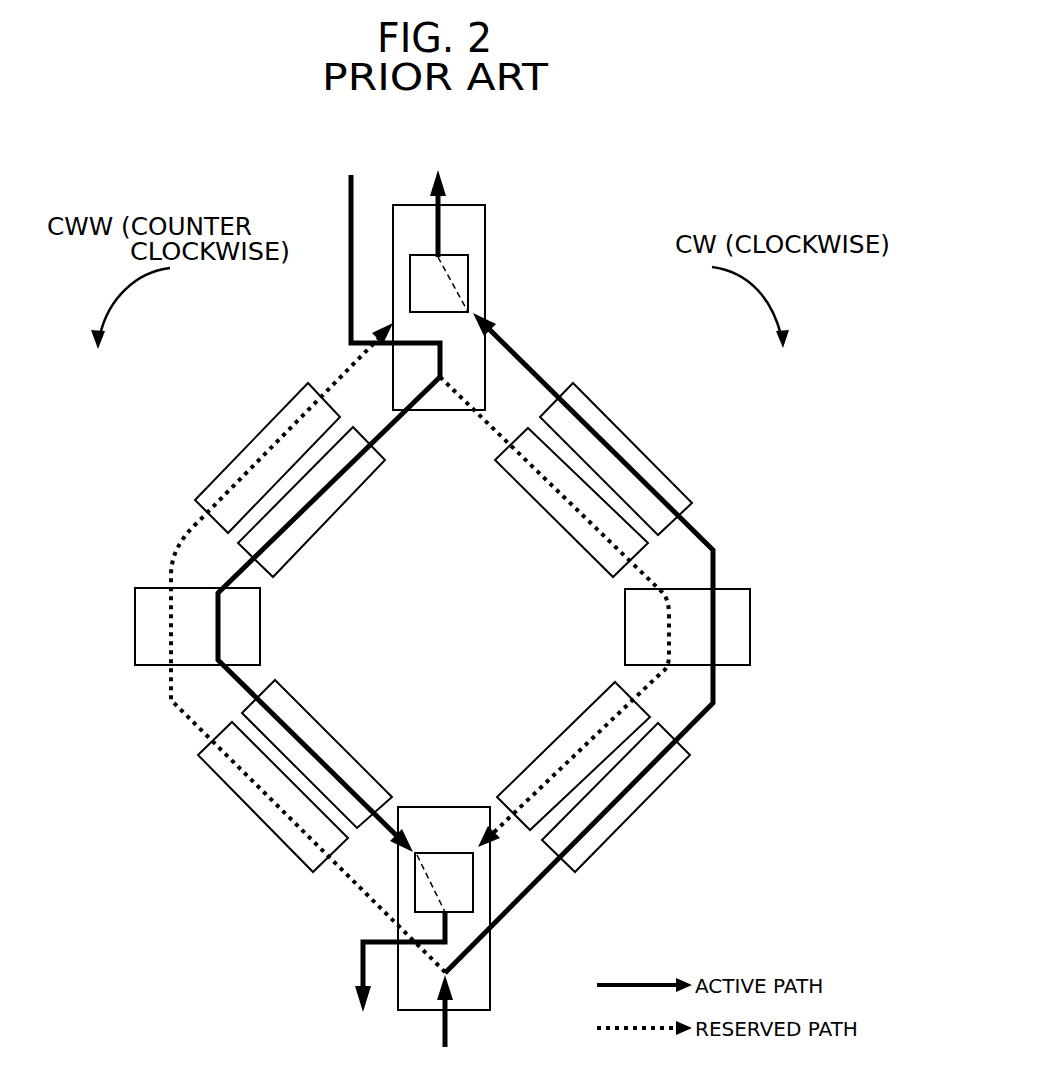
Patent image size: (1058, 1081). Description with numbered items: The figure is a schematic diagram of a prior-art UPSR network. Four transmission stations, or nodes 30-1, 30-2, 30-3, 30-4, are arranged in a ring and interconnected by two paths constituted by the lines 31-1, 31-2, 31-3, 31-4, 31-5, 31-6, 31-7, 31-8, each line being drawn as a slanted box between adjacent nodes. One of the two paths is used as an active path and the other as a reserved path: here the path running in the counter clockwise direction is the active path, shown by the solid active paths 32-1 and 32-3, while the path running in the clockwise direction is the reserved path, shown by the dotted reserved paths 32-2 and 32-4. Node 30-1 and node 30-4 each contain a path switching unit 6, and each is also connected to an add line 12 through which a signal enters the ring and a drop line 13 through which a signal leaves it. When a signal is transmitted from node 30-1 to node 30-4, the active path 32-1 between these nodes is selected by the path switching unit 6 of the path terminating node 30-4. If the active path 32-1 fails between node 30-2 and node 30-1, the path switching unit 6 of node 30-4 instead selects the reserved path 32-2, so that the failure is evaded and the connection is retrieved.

The path switching unit 6 is at (468, 283).
The add line 12 is at (350, 193).
The drop line 13 is at (440, 192).
The transmission station (node) 30-1 is at (485, 232).
The transmission station (node) 30-2 is at (247, 627).
The transmission station (node) 30-3 is at (752, 635).
The transmission station (node) 30-4 is at (448, 807).
The line 31-1 is at (330, 520).
The line 31-2 is at (332, 732).
The line 31-3 is at (555, 737).
The line 31-4 is at (553, 520).
The line 31-5 is at (250, 443).
The line 31-6 is at (232, 793).
The line 31-7 is at (637, 820).
The line 31-8 is at (637, 438).
The active path 32-1 is at (393, 425).
The reserved path 32-2 is at (670, 633).
The active path 32-3 is at (525, 362).
The reserved path 32-4 is at (187, 530).